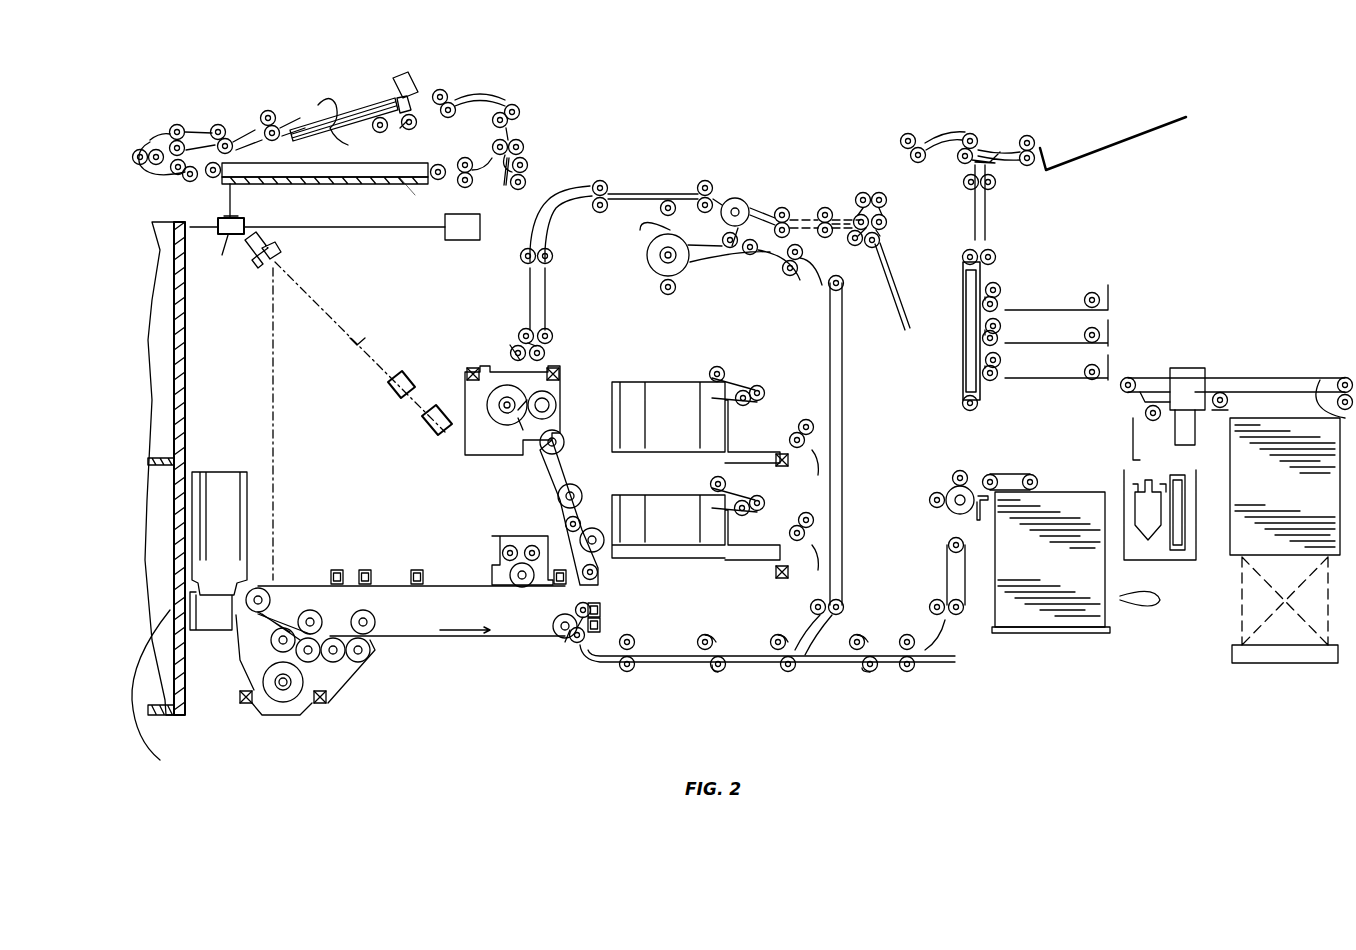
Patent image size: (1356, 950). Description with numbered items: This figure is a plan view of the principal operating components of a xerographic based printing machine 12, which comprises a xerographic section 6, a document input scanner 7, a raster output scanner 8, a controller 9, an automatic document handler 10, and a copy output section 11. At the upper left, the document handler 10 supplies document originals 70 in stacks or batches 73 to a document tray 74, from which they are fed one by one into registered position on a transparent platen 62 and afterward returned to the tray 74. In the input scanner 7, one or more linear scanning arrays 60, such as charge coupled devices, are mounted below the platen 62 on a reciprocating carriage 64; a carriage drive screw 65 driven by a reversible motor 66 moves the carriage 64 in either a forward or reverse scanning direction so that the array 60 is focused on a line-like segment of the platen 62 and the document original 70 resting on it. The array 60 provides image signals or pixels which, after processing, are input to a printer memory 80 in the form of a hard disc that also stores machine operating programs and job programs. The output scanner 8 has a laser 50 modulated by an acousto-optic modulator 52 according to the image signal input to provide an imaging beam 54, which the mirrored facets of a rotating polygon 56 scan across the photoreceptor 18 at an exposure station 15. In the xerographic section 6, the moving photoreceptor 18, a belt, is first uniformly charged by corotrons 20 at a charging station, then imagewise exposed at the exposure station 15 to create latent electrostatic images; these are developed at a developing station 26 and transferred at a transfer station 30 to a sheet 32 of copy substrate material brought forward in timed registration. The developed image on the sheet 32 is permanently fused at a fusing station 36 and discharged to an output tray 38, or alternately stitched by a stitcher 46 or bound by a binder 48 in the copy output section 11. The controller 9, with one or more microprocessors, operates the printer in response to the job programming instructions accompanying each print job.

The automatic document handler 10 is at (172, 115).
The stacks or batches 73 is at (409, 123).
The document original 70 is at (368, 76).
The document tray 74 is at (326, 164).
The transparent platen 62 is at (378, 178).
The linear scanning array 60 is at (222, 216).
The reciprocating carriage 64 is at (217, 258).
The carriage drive screw 65 is at (358, 228).
The document input scanner 7 is at (276, 221).
The reversible motor 66 is at (462, 235).
The raster output scanner 8 is at (352, 267).
The rotating polygon 56 is at (268, 262).
The imaging beam 54 is at (372, 337).
The acousto-optic modulator 52 is at (408, 370).
The laser 50 is at (435, 440).
The controller 9 is at (186, 735).
The printer memory 80 is at (160, 697).
The exposure station 15 is at (260, 580).
The photoreceptor 18 is at (393, 636).
The corotrons 20 is at (366, 570).
The xerographic section 6 is at (470, 678).
The developing station 26 is at (244, 652).
The transfer station 30 is at (582, 681).
The fusing station 36 is at (583, 382).
The machine 12 is at (758, 148).
The output tray 38 is at (1125, 145).
The copy output section 11 is at (1164, 276).
The stitcher 46 is at (1322, 395).
The binder 48 is at (1128, 467).
The sheet 32 is at (1135, 540).